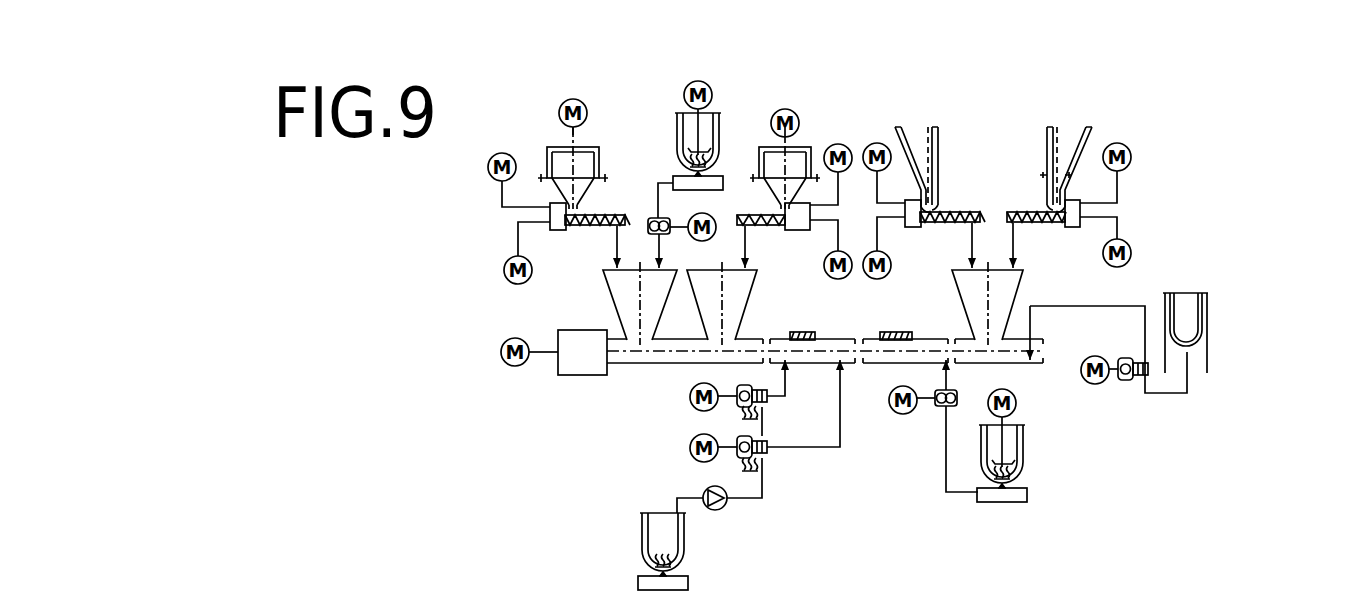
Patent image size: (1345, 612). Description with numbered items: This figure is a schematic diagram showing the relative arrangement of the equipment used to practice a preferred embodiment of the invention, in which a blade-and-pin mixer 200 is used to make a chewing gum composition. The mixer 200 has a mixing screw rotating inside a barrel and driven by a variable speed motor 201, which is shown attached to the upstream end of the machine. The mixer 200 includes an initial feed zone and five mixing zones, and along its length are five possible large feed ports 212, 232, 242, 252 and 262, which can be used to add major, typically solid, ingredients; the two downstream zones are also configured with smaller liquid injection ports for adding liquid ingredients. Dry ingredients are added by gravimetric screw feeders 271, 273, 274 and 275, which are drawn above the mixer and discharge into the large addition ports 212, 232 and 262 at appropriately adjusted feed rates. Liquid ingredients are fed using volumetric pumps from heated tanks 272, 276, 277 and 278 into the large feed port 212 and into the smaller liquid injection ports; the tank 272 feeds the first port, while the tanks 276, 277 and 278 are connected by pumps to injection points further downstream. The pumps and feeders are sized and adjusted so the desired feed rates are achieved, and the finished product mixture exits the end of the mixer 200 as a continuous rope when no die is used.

The mixer 200 is at (631, 376).
The variable speed motor 201 is at (512, 367).
The large feed port 212 is at (633, 326).
The large feed port 232 is at (730, 328).
The large feed port 242 is at (805, 332).
The large feed port 252 is at (898, 332).
The large feed port 262 is at (993, 328).
The gravimetric screw feeder 271 is at (598, 155).
The tank 272 is at (719, 128).
The gravimetric screw feeder 273 is at (809, 150).
The gravimetric screw feeder 274 is at (910, 130).
The gravimetric screw feeder 275 is at (1091, 128).
The tank 276 is at (688, 556).
The tank 277 is at (1023, 447).
The tank 278 is at (1207, 330).